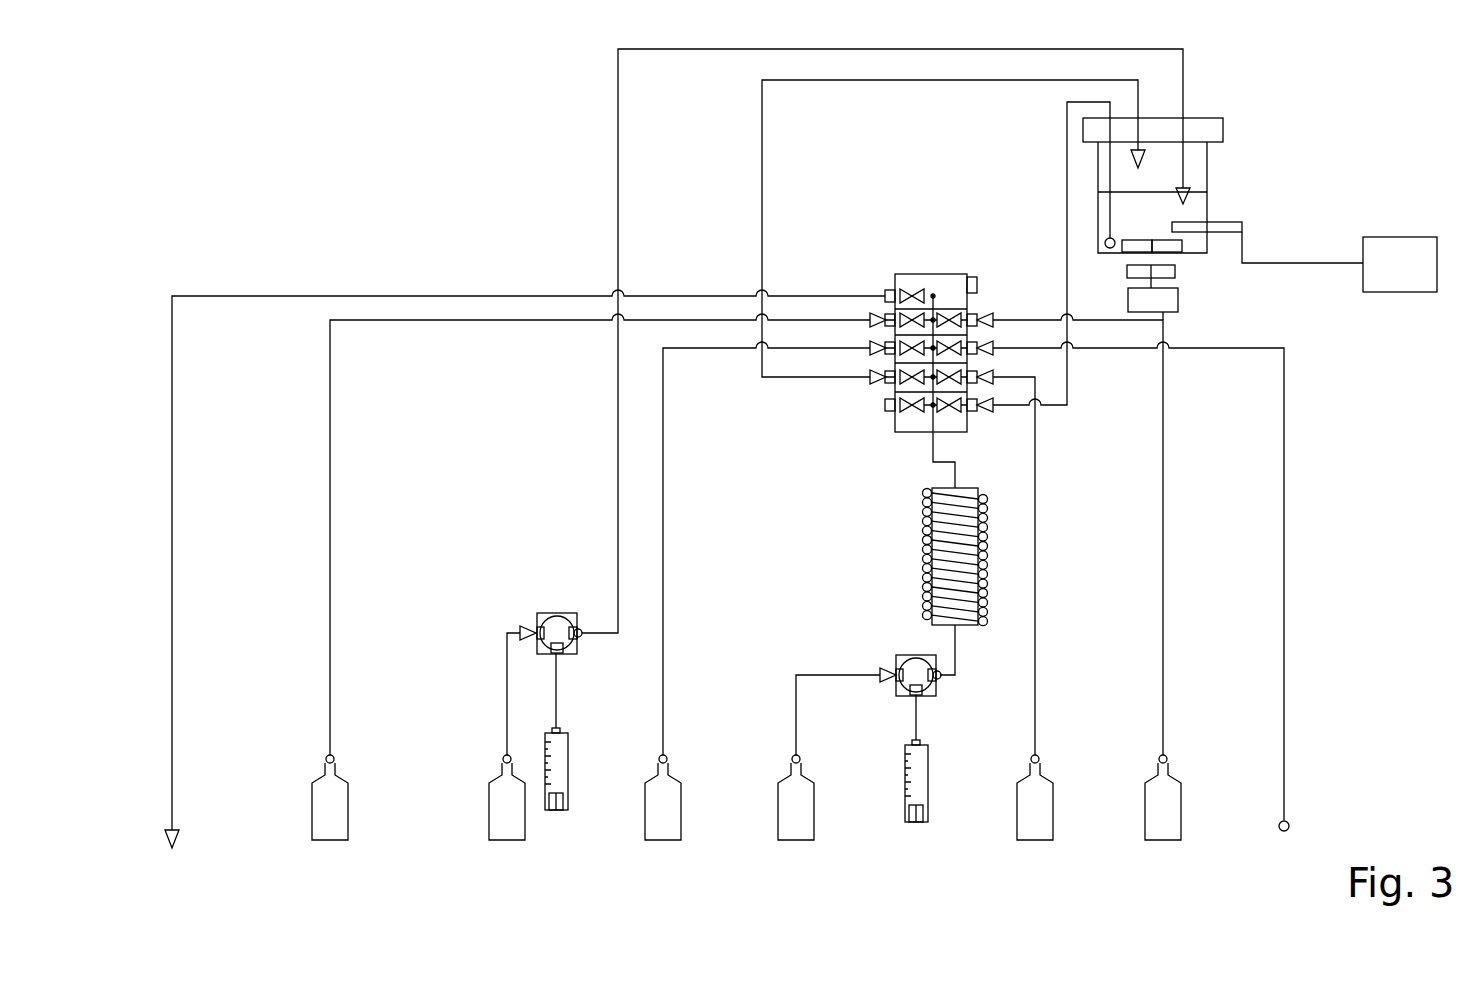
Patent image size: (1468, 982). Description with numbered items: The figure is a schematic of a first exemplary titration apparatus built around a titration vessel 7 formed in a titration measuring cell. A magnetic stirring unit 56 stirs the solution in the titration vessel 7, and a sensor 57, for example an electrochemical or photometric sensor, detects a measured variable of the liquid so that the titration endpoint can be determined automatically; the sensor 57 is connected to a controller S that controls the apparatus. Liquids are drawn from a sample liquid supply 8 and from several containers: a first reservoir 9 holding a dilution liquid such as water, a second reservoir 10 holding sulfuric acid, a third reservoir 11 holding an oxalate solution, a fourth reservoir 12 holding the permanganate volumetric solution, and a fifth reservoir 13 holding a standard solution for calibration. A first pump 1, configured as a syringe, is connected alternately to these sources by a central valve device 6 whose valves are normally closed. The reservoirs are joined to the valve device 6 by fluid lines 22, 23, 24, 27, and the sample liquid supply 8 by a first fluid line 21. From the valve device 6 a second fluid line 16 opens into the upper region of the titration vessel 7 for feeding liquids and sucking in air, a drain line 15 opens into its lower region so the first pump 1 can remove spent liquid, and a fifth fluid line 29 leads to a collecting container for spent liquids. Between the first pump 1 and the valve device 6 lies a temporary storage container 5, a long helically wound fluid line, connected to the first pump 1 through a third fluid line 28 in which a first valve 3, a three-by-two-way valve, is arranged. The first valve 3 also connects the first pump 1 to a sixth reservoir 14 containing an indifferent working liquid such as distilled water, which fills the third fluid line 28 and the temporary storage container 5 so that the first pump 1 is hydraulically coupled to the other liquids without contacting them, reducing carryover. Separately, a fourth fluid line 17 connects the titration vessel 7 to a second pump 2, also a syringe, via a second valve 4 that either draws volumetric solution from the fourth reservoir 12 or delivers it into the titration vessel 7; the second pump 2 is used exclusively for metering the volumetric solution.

The first pump 1 is at (916, 822).
The second pump 2 is at (556, 808).
The first valve 3 is at (916, 655).
The second valve 4 is at (557, 613).
The temporary storage container 5 is at (925, 505).
The valve device 6 is at (947, 274).
The titration vessel 7 is at (1195, 152).
The sample liquid supply 8 is at (1285, 765).
The first reservoir 9 is at (1165, 826).
The second reservoir 10 is at (1037, 826).
The third reservoir 11 is at (666, 826).
The fourth reservoir 12 is at (510, 826).
The fifth reservoir 13 is at (334, 826).
The sixth reservoir 14 is at (797, 826).
The drain line 15 is at (1110, 160).
The second fluid line 16 is at (1140, 102).
The fourth fluid line 17 is at (617, 443).
The first fluid line 21 is at (1285, 648).
The fluid line 22 is at (665, 645).
The fluid line 23 is at (1037, 648).
The fluid line 24 is at (1165, 647).
The fluid line 27 is at (330, 626).
The third fluid line 28 is at (915, 720).
The fifth fluid line 29 is at (170, 628).
The magnetic stirring unit 56 is at (1198, 282).
The sensor 57 is at (1238, 223).